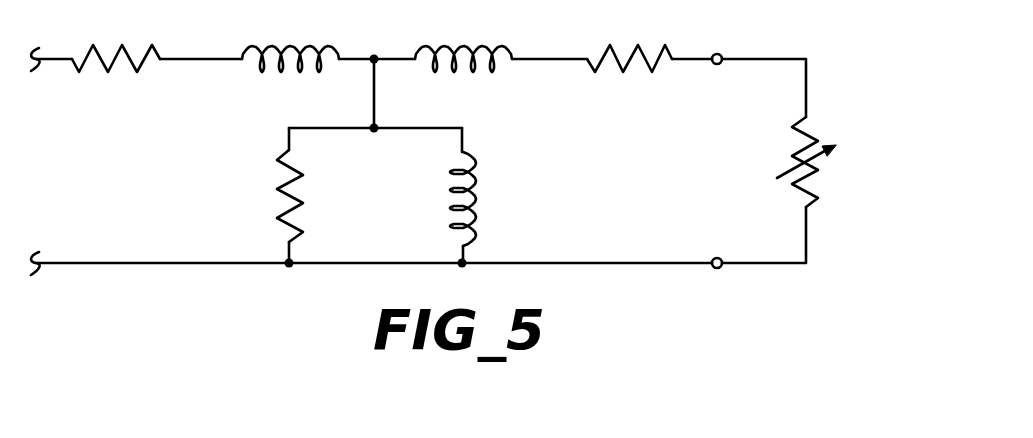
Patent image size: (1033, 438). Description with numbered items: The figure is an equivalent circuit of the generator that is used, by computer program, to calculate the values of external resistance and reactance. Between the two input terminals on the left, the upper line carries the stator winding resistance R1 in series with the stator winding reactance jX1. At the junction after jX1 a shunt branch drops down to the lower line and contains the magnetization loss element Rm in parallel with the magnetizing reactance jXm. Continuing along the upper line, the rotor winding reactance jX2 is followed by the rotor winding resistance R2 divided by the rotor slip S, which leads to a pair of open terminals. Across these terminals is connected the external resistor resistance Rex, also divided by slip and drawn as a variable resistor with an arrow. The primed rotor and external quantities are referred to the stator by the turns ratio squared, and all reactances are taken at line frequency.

The stator winding resistance R1 is at (116, 36).
The stator winding reactance jX1 is at (290, 36).
The rotor winding reactance jX2 is at (475, 1).
The rotor winding resistance R2 is at (620, 1).
The magnetization loss reactance Rm is at (269, 196).
The magnetizing reactance jXm is at (490, 199).
The external resistor resistance Rex is at (844, 165).